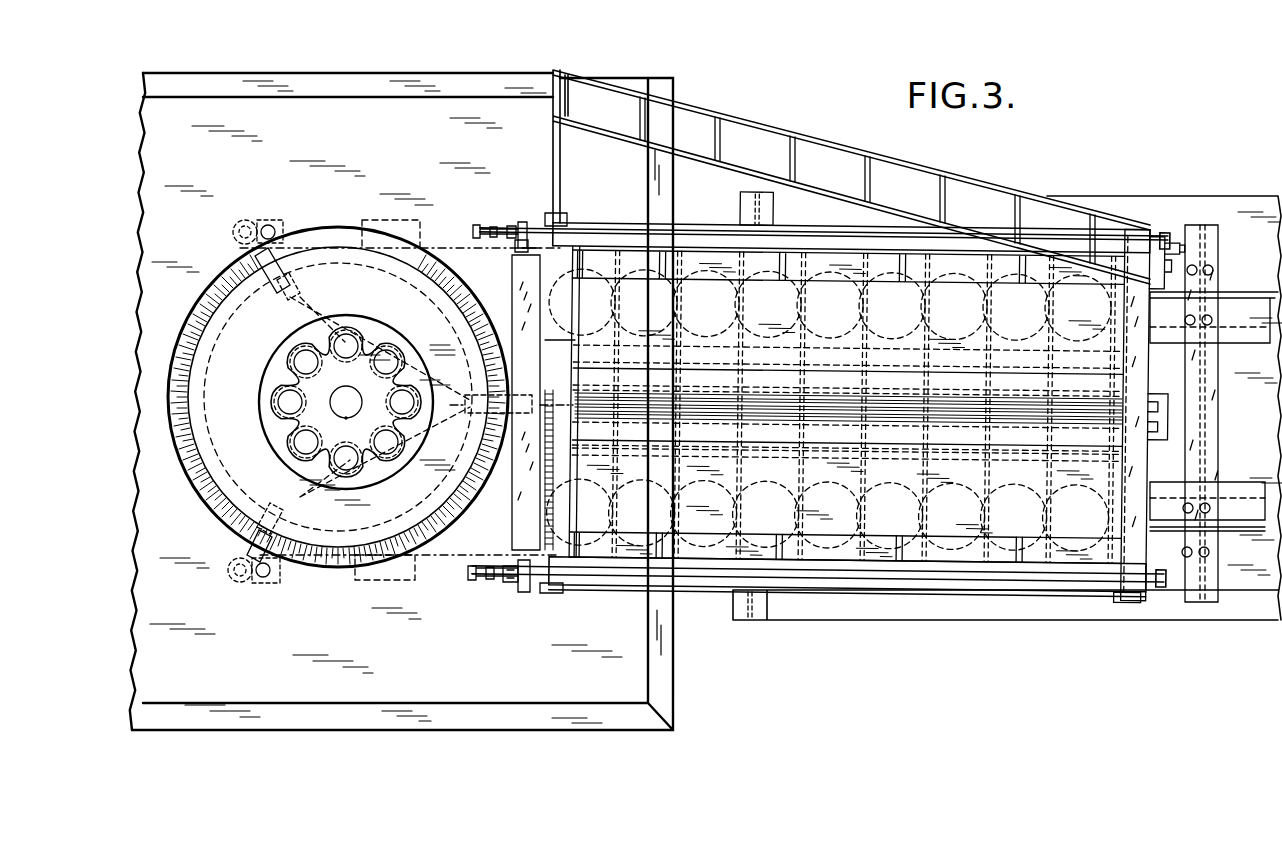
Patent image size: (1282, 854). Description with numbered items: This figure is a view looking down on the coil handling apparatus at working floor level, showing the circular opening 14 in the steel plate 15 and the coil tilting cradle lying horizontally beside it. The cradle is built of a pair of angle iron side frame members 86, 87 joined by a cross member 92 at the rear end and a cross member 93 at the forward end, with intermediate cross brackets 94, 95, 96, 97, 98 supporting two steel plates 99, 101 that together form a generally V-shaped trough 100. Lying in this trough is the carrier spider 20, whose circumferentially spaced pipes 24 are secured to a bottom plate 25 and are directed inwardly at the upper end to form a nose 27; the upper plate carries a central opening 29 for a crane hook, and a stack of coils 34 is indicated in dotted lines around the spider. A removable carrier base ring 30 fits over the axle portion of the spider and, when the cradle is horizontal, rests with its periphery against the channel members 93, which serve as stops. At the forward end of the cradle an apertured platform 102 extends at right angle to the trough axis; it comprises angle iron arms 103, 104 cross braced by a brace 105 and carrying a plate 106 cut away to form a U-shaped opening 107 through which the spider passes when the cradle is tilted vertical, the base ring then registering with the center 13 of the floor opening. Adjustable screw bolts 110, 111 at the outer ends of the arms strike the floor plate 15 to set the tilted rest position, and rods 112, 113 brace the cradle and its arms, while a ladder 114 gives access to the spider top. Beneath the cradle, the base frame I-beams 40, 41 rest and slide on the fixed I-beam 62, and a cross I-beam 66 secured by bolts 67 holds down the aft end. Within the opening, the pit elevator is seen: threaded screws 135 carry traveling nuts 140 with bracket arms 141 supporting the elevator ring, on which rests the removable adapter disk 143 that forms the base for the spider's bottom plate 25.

The center 13 is at (346, 400).
The opening 14 is at (330, 227).
The steel plate 15 is at (367, 158).
The carrier spider 20 is at (295, 345).
The pipes 24 is at (392, 350).
The bottom plate 25 is at (262, 425).
The nose 27 is at (274, 402).
The central opening 29 is at (346, 418).
The carrier base ring 30 is at (536, 240).
The coils 34 is at (640, 270).
The I-beam 40 is at (1240, 482).
The I-beam 41 is at (1243, 344).
The I-beam 62 is at (740, 210).
The cross I-beam 66 is at (1218, 412).
The bolts 67 is at (1214, 269).
The side frame member 86 is at (705, 575).
The side frame member 87 is at (803, 240).
The cross member 92 is at (1133, 600).
The cross member 93 is at (562, 214).
The cross bracket 94 is at (1021, 560).
The cross bracket 95 is at (903, 558).
The cross bracket 96 is at (783, 558).
The cross bracket 97 is at (660, 548).
The cross bracket 98 is at (580, 560).
The steel plate 99 is at (749, 477).
The trough 100 is at (622, 547).
The steel plate 101 is at (749, 352).
The platform 102 is at (520, 590).
The angle iron arm 103 is at (505, 578).
The angle iron arm 104 is at (316, 302).
The brace 105 is at (512, 275).
The plate 106 is at (312, 490).
The U-shaped opening 107 is at (447, 380).
The adjustable screw bolt 110 is at (265, 580).
The adjustable screw bolt 111 is at (270, 224).
The rod 112 is at (855, 585).
The rod 113 is at (842, 232).
The ladder 114 is at (780, 130).
The threaded screws 135 is at (232, 232).
The traveling nut 140 is at (247, 218).
The bracket arm 141 is at (255, 257).
The adapter disk 143 is at (336, 548).